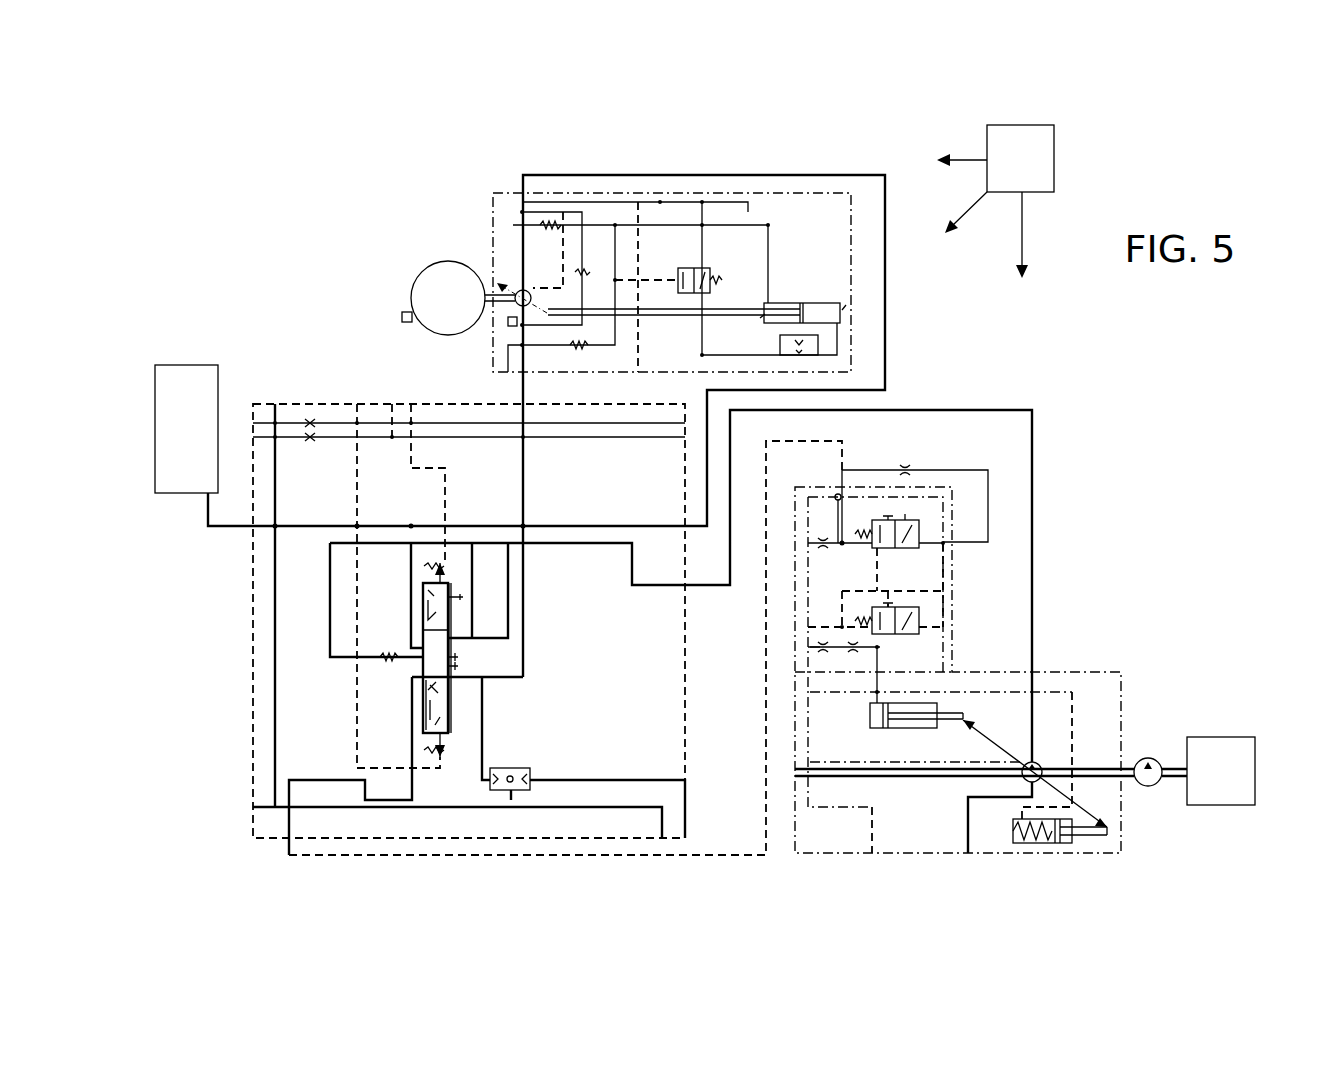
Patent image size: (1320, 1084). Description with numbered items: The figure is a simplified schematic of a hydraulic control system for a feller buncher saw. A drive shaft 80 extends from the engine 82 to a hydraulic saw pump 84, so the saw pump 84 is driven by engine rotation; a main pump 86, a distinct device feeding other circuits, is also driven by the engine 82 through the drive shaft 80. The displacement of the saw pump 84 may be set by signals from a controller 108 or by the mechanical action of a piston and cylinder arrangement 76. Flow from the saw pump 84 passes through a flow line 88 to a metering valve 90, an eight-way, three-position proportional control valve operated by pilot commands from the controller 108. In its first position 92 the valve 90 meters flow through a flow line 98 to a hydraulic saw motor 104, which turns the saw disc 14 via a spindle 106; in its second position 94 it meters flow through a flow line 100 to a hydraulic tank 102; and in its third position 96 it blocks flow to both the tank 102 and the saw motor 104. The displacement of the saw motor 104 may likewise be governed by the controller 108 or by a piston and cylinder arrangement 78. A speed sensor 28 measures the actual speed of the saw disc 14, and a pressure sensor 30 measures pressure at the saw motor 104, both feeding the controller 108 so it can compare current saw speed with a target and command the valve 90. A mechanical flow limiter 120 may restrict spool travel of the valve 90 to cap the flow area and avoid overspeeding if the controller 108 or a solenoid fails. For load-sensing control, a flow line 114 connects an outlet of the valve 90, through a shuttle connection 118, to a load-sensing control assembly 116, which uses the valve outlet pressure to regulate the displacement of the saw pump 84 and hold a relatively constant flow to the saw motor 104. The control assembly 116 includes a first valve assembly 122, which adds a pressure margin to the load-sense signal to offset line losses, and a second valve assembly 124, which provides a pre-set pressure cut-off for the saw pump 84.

The saw disc 14 is at (421, 271).
The speed sensor 28 is at (401, 316).
The pressure sensor 30 is at (510, 326).
The piston and cylinder arrangement 76 is at (970, 698).
The piston and cylinder arrangement 78 is at (848, 327).
The drive shaft 80 is at (927, 778).
The engine 82 is at (1213, 805).
The hydraulic saw pump 84 is at (1041, 765).
The main pump 86 is at (1153, 759).
The flow line 88 is at (1032, 603).
The metering valve 90 is at (392, 682).
The first position 92 is at (423, 612).
The second position 94 is at (450, 720).
The third position 96 is at (423, 665).
The flow line 98 is at (520, 383).
The flow line 100 is at (508, 632).
The hydraulic tank 102 is at (178, 365).
The hydraulic saw motor 104 is at (518, 290).
The spindle 106 is at (498, 287).
The controller 108 is at (1055, 140).
The flow line 114 is at (482, 717).
The load-sensing control assembly 116 is at (975, 572).
The shuttle connection 118 is at (531, 790).
The flow limiter 120 is at (460, 598).
The first valve assembly 122 is at (933, 502).
The second valve assembly 124 is at (865, 665).